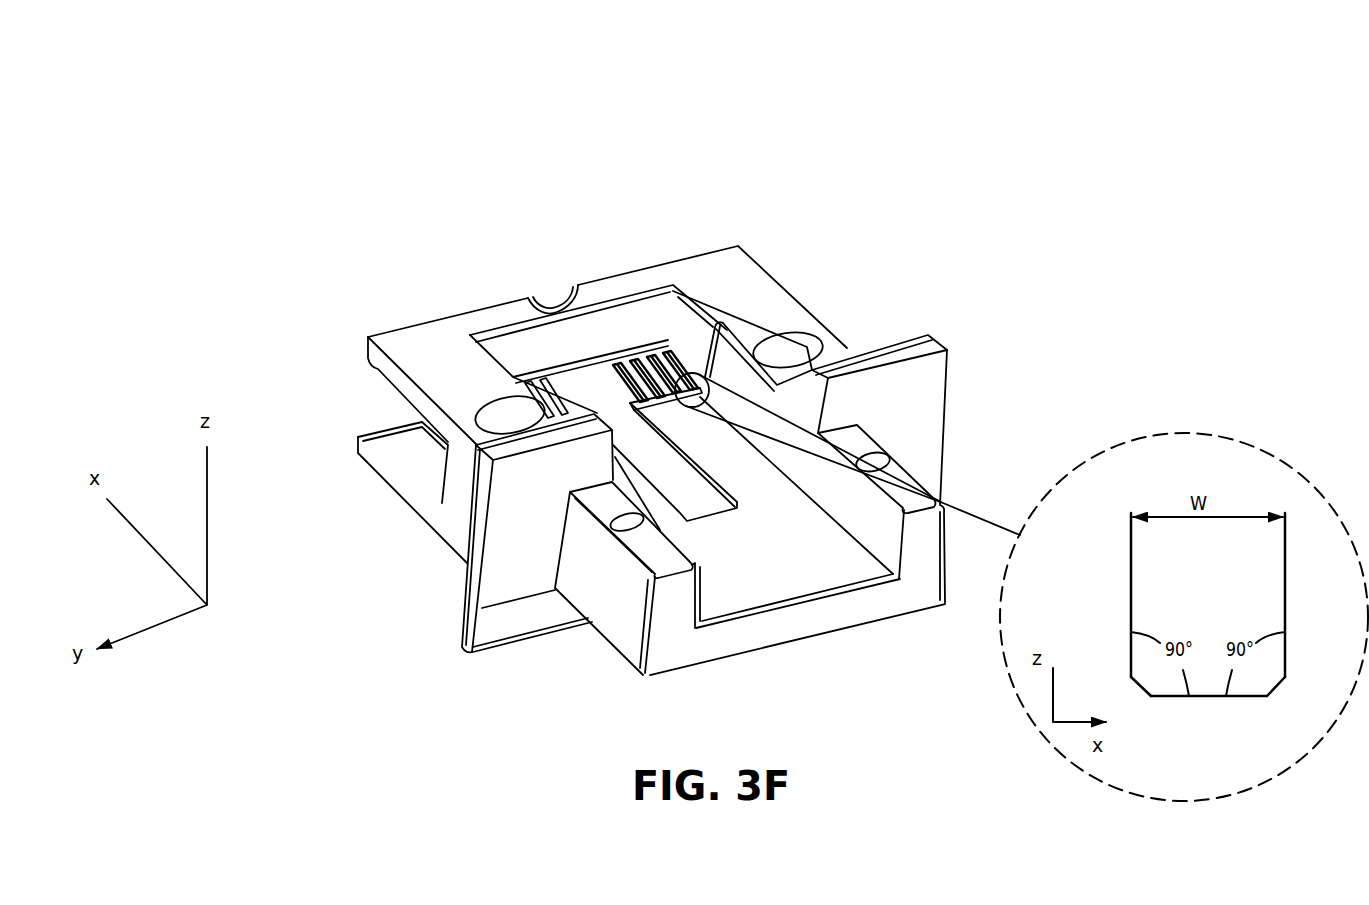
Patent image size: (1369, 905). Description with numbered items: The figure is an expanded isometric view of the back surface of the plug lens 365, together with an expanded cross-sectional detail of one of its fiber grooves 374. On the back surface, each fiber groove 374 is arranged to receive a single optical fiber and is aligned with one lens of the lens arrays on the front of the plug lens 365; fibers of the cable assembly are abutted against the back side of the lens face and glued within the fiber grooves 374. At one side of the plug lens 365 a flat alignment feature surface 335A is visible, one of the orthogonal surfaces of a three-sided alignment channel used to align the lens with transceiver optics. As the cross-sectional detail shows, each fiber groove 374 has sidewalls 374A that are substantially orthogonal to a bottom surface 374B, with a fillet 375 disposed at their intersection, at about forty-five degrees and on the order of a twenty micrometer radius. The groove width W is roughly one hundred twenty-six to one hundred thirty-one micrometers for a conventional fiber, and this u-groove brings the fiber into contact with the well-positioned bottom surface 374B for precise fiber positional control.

The plug lens 365 is at (466, 147).
The fiber groove 374 is at (664, 352).
The alignment feature surface 335A is at (408, 452).
The sidewalls 374A is at (1287, 603).
The bottom surface 374B is at (1203, 698).
The fillet 375 is at (1138, 692).